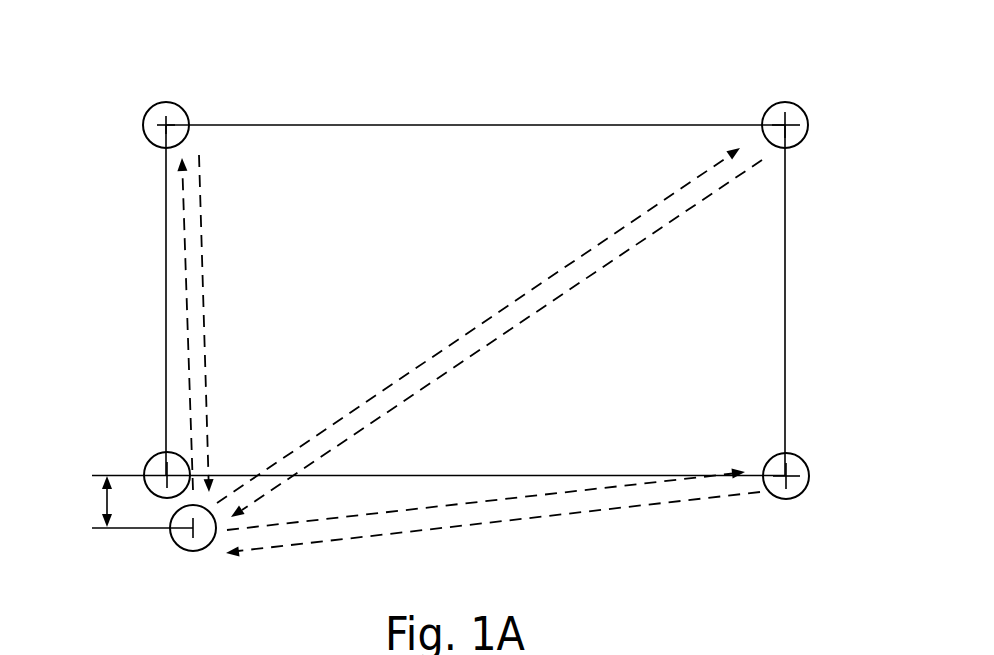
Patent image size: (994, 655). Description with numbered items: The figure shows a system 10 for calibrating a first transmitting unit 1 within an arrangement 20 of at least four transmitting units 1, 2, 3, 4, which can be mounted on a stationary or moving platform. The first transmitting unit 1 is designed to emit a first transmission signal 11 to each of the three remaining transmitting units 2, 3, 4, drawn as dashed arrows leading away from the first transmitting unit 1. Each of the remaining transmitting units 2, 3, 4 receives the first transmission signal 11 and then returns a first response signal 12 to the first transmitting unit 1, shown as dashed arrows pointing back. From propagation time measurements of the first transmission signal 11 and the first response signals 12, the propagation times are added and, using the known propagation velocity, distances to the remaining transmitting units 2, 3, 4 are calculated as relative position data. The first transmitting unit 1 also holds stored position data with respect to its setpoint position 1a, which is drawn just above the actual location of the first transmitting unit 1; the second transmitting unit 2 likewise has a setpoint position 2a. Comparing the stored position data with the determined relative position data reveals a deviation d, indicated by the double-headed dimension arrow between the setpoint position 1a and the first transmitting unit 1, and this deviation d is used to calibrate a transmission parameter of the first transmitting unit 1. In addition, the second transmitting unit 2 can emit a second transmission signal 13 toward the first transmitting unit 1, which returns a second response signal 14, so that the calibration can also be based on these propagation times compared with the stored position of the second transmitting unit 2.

The system 10 is at (238, 74).
The arrangement 20 is at (855, 278).
The first transmitting unit 1 is at (195, 542).
The setpoint position 1a is at (155, 463).
The second transmitting unit 2 is at (107, 133).
The setpoint position 2a is at (155, 130).
The third transmitting unit 3 is at (800, 123).
The fourth transmitting unit 4 is at (800, 478).
The first transmission signal 11 is at (381, 339).
The first response signal 12 is at (480, 380).
The second transmission signal 13 is at (201, 215).
The second response signal 14 is at (182, 238).
The deviation d is at (106, 502).